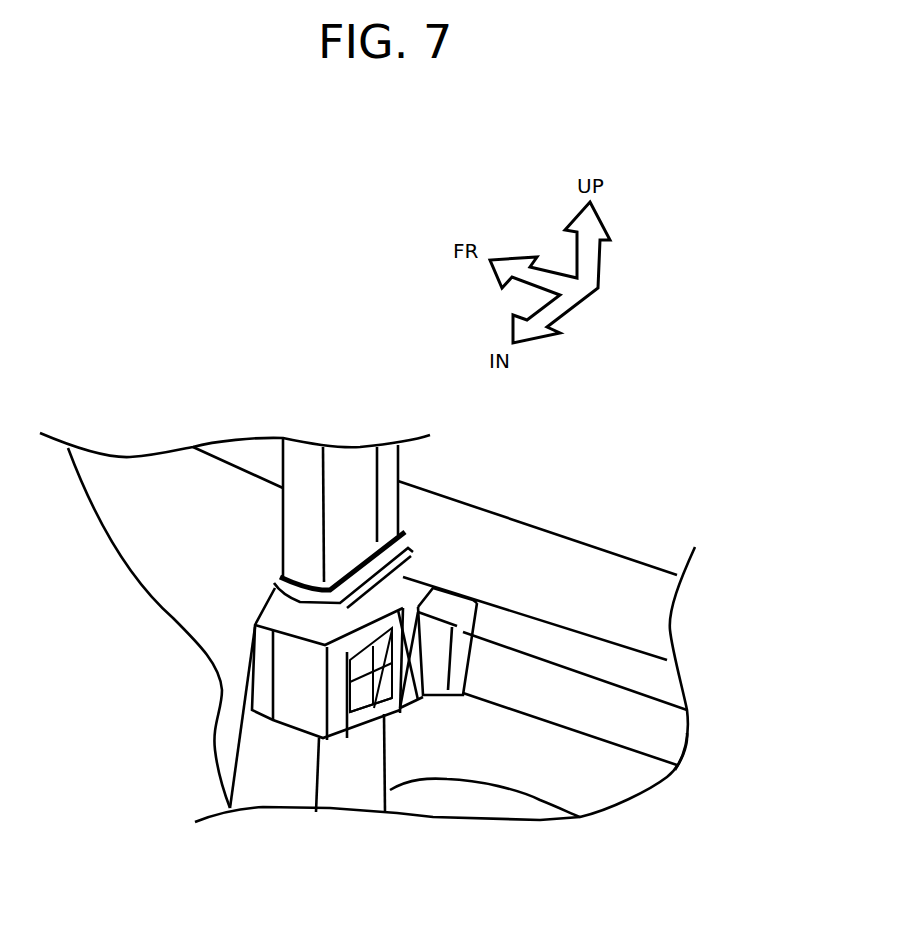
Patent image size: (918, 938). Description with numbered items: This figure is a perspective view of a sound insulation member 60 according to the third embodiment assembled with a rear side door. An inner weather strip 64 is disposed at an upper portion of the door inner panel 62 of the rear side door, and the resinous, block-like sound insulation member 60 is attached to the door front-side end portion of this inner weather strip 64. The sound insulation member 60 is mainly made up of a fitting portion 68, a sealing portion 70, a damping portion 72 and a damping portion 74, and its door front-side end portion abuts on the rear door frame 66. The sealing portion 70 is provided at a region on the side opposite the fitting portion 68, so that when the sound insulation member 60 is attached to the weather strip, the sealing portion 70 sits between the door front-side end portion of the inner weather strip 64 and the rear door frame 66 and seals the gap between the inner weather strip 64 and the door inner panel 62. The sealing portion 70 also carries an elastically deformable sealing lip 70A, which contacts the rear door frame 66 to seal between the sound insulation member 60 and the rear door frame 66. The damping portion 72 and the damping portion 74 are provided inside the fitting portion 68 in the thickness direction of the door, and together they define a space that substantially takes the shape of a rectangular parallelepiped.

The sound insulation member 60 is at (448, 582).
The door inner panel 62 is at (502, 813).
The inner weather strip 64 is at (608, 655).
The rear door frame 66 is at (282, 467).
The fitting portion 68 is at (453, 710).
The sealing portion 70 is at (365, 553).
The sealing lip 70A is at (338, 558).
The damping portion 72 is at (345, 673).
The damping portion 74 is at (364, 738).